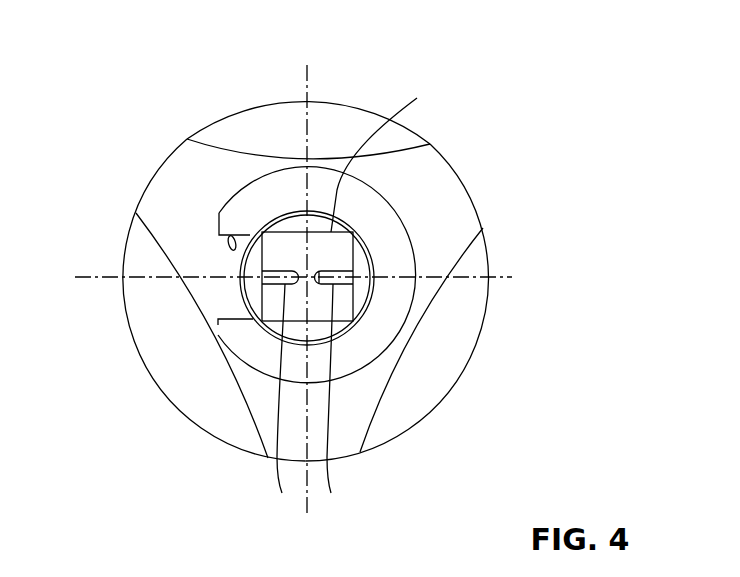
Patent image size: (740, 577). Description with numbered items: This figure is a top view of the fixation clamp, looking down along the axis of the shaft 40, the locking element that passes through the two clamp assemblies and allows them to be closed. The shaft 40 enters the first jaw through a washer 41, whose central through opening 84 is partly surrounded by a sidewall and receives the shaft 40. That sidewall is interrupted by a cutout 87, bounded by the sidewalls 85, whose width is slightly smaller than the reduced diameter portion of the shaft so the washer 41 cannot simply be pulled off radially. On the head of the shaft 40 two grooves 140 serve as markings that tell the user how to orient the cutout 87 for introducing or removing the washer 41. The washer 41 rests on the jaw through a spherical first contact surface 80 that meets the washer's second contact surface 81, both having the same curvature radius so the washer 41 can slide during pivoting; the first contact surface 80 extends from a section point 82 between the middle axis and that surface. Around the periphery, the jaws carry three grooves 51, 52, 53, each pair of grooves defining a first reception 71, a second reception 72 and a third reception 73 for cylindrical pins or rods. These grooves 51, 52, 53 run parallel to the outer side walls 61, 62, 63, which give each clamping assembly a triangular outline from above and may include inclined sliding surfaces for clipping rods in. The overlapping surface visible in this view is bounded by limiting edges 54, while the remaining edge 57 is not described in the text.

The shaft 40 is at (330, 243).
The washer 41 is at (380, 223).
The groove 51 is at (337, 127).
The first reception 71 is at (337, 127).
The groove 52 is at (397, 403).
The second reception 72 is at (397, 403).
The groove 53 is at (205, 387).
The third reception 73 is at (205, 387).
The limiting edges 54 is at (206, 144).
The inclined guide edge 57 is at (437, 291).
The outer side wall 61 is at (243, 110).
The outer side wall 62 is at (453, 380).
The outer side wall 63 is at (172, 397).
The first contact surface 80 is at (453, 221).
The second contact surface 81 is at (393, 258).
The section point 82 is at (201, 255).
The central through opening 84 is at (380, 153).
The sidewalls 85 is at (222, 210).
The cutout 87 is at (243, 299).
The grooves 140 is at (308, 403).